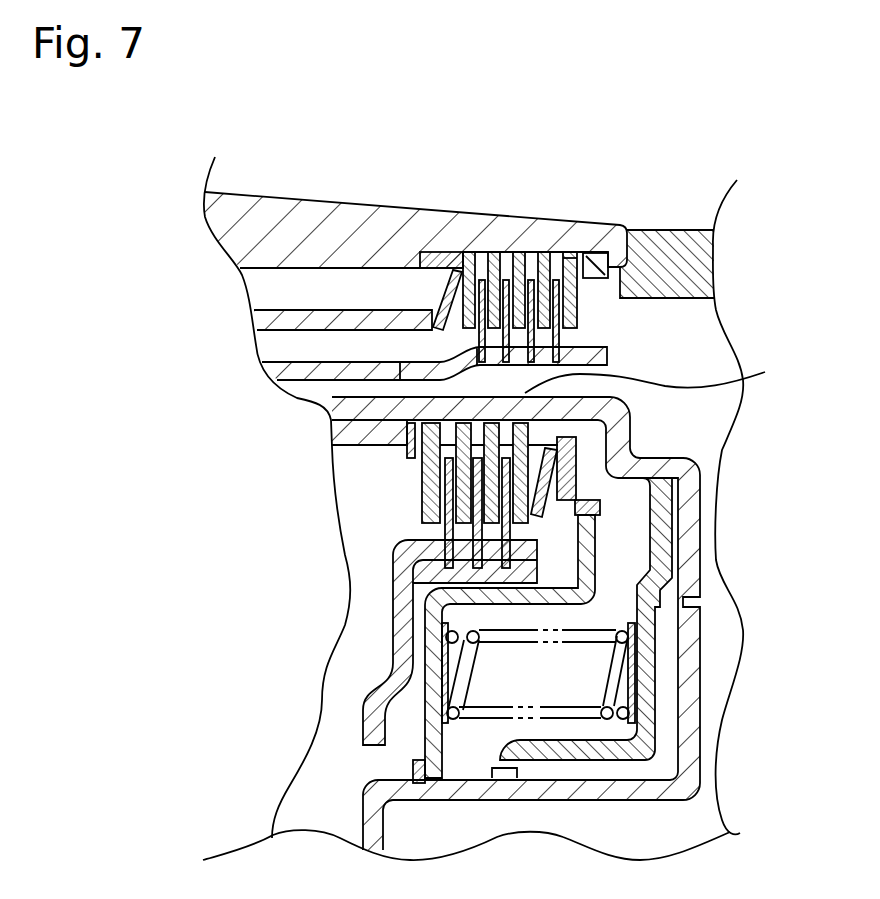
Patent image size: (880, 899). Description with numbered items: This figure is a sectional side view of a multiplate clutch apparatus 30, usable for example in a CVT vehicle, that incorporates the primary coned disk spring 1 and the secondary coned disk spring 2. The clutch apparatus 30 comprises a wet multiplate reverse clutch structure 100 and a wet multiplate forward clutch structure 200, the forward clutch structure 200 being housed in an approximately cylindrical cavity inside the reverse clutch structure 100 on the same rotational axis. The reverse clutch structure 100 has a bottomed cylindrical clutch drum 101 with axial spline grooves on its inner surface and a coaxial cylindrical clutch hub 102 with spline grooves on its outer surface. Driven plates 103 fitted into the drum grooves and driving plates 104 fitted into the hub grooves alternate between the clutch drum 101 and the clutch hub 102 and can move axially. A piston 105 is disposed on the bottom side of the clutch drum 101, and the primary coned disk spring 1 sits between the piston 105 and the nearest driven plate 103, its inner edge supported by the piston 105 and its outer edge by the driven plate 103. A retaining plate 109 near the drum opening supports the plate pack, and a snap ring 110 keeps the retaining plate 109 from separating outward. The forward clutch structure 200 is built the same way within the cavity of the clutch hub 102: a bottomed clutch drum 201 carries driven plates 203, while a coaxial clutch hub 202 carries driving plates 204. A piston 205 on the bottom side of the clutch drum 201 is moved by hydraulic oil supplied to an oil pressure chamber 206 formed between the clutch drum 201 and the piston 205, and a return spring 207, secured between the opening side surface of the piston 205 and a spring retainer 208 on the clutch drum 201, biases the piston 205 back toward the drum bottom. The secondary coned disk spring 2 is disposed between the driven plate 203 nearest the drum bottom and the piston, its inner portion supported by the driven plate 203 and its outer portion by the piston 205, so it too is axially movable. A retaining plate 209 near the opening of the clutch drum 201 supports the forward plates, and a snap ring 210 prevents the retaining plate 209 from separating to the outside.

The clutch apparatus 30 is at (167, 168).
The reverse clutch structure 100 is at (266, 161).
The clutch drum 101 is at (318, 210).
The clutch hub 102 is at (423, 370).
The driven plates 103 is at (493, 257).
The driving plates 104 is at (521, 277).
The piston 105 is at (268, 317).
The retaining plate 109 is at (572, 258).
The snap ring 110 is at (597, 255).
The primary coned disk spring 1 is at (440, 277).
The forward clutch structure 200 is at (231, 739).
The clutch drum 201 is at (630, 446).
The clutch hub 202 is at (530, 550).
The driven plates 203 is at (525, 395).
The driving plates 204 is at (478, 495).
The piston 205 is at (650, 540).
The oil pressure chamber 206 is at (667, 586).
The return spring 207 is at (610, 681).
The spring retainer 208 is at (424, 735).
The retaining plate 209 is at (447, 520).
The snap ring 210 is at (407, 450).
The secondary coned disk spring 2 is at (602, 504).